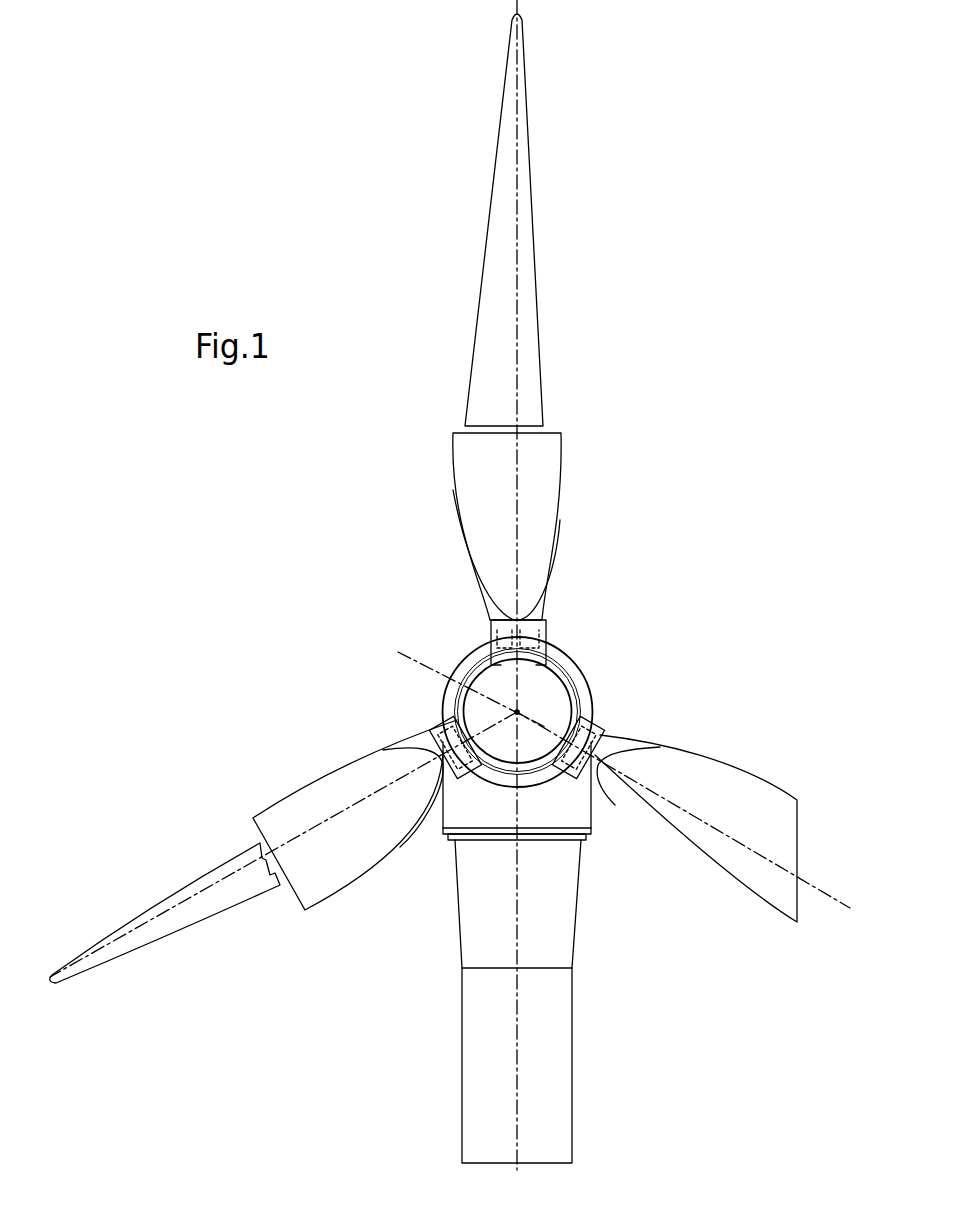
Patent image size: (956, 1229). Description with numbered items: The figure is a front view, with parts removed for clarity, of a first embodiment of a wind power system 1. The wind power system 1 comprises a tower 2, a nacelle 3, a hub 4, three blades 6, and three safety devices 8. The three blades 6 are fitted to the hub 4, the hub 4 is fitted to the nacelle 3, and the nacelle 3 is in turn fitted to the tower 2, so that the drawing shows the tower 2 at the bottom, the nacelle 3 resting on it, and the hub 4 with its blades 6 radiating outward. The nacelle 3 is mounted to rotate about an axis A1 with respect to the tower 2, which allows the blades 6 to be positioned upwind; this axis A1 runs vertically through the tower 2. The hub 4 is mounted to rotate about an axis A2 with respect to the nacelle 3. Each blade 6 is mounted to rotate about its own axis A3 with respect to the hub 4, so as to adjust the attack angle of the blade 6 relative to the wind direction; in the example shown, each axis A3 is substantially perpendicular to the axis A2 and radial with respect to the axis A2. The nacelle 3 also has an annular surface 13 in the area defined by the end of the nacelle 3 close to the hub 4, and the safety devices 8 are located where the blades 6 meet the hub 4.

The wind power system 1 is at (268, 544).
The tower 2 is at (537, 1037).
The nacelle 3 is at (580, 808).
The hub 4 is at (548, 700).
The blade 6 is at (538, 497).
The safety device 8 is at (484, 641).
The annular surface 13 is at (556, 661).
The axis A1 is at (517, 1123).
The axis A2 is at (450, 681).
The axis A3 is at (520, 378).